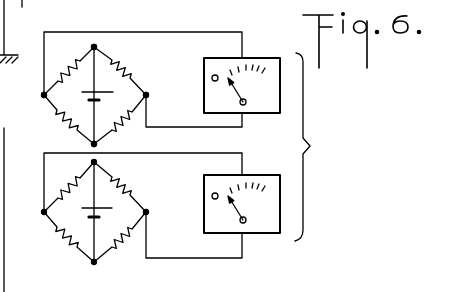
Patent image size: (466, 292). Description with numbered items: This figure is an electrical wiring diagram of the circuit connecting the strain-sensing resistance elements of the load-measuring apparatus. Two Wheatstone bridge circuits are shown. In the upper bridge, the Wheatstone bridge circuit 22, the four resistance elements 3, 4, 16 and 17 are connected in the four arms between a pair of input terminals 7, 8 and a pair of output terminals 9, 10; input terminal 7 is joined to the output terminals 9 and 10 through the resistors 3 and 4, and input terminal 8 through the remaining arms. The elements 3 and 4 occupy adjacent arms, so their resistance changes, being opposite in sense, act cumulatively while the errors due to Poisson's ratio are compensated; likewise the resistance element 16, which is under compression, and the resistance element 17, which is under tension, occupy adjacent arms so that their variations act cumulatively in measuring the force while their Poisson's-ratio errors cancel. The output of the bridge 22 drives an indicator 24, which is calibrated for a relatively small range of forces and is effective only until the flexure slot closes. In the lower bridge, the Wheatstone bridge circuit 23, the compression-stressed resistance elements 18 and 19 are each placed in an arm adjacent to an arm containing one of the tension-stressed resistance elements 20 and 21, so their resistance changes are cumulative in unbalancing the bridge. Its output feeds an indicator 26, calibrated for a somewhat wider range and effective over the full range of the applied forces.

The resistor 3 is at (71, 59).
The resistor 4 is at (60, 122).
The input terminal 7 is at (96, 47).
The input terminal 8 is at (96, 144).
The output terminal 9 is at (43, 95).
The output terminal 10 is at (147, 95).
The resistance element 16 is at (127, 68).
The resistance element 17 is at (14, 264).
The resistance element 18 is at (127, 183).
The resistance element 19 is at (62, 238).
The resistance element 20 is at (71, 178).
The resistance element 21 is at (118, 245).
The Wheatstone bridge circuit 22 is at (80, 101).
The Wheatstone bridge circuit 23 is at (73, 219).
The indicator 24 is at (255, 57).
The indicator 26 is at (254, 233).